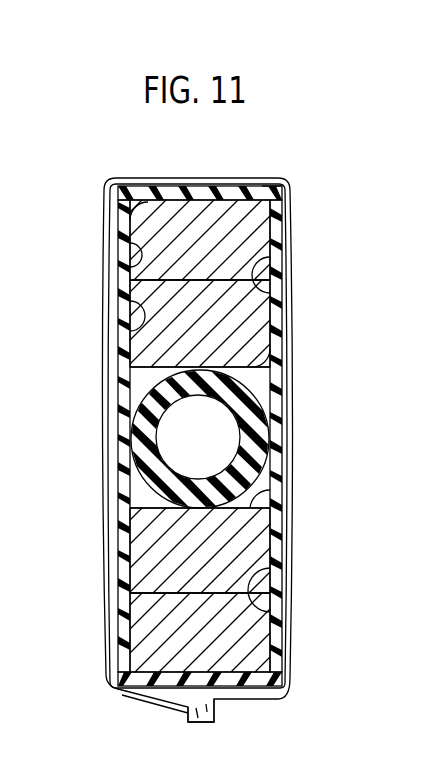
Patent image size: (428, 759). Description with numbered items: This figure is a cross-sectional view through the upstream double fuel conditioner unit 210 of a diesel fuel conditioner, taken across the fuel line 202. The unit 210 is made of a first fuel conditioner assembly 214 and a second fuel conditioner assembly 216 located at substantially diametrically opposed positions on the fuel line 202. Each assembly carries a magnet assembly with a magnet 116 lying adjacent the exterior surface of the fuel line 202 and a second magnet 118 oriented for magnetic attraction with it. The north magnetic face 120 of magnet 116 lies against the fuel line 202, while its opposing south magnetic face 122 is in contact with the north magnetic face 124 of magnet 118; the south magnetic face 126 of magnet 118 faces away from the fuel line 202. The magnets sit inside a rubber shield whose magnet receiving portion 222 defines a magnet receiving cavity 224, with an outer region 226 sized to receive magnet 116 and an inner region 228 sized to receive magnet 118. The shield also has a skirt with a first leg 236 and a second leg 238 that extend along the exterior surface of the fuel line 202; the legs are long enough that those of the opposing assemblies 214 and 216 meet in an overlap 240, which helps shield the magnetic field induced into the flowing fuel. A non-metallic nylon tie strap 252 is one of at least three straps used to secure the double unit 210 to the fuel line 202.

The upstream unit 210 is at (72, 652).
The first fuel conditioner assembly 214 is at (348, 213).
The second fuel conditioner assembly 216 is at (345, 660).
The magnet 116 is at (262, 323).
The second magnet 118 is at (268, 216).
The north magnetic face 120 is at (278, 373).
The south magnetic face 122 is at (262, 258).
The north magnetic face 124 is at (270, 300).
The south magnetic face 126 is at (196, 189).
The fuel line 202 is at (160, 395).
The magnet receiving portion 222 is at (262, 183).
The magnet receiving cavity 224 is at (118, 207).
The outer region 226 is at (131, 297).
The inner region 228 is at (127, 229).
The first leg 236 is at (125, 406).
The second leg 238 is at (118, 479).
The overlap 240 is at (112, 433).
The tie strap 252 is at (110, 518).